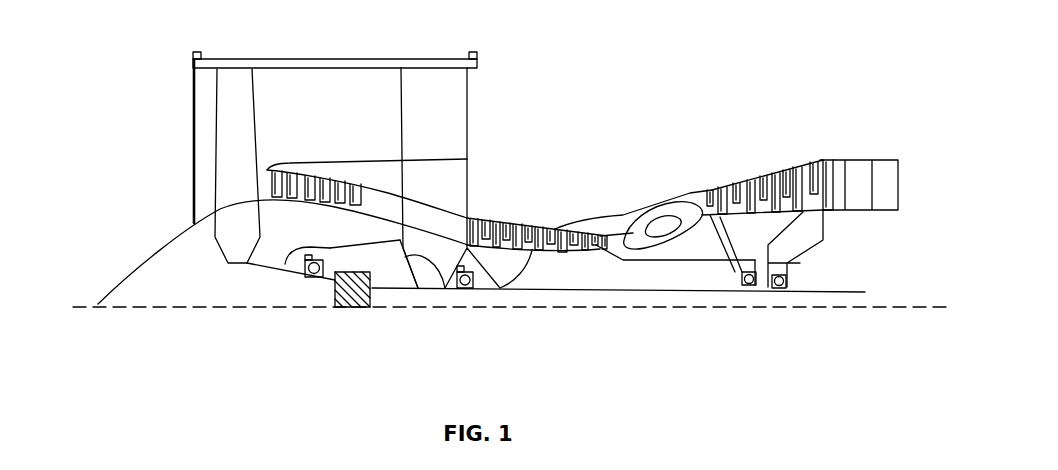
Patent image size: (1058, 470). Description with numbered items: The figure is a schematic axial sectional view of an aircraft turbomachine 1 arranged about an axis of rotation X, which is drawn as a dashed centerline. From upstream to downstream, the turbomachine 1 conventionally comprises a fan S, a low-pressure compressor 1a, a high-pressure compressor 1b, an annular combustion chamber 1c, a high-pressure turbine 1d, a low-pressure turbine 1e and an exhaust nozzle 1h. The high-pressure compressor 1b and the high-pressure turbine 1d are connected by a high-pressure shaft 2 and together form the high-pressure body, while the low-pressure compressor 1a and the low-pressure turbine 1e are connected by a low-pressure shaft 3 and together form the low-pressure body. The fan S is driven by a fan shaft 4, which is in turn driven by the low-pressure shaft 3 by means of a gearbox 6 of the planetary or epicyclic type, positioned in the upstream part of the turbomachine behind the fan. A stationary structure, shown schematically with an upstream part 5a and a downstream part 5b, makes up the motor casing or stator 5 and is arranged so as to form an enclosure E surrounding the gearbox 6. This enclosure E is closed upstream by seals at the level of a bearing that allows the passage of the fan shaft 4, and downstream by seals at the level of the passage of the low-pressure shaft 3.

The turbomachine 1 is at (581, 99).
The low-pressure compressor 1a is at (295, 172).
The high-pressure compressor 1b is at (500, 222).
The annular combustion chamber 1c is at (661, 222).
The high-pressure turbine 1d is at (712, 210).
The low-pressure turbine 1e is at (829, 167).
The exhaust nozzle 1h is at (895, 187).
The fan S is at (228, 131).
The axis of rotation X is at (98, 304).
The high-pressure shaft 2 is at (660, 263).
The low-pressure shaft 3 is at (593, 293).
The fan shaft 4 is at (295, 283).
The motor casing or stator 5 is at (392, 245).
The upstream part 5a is at (285, 264).
The downstream part 5b is at (445, 288).
The gearbox 6 is at (350, 297).
The enclosure E is at (385, 277).